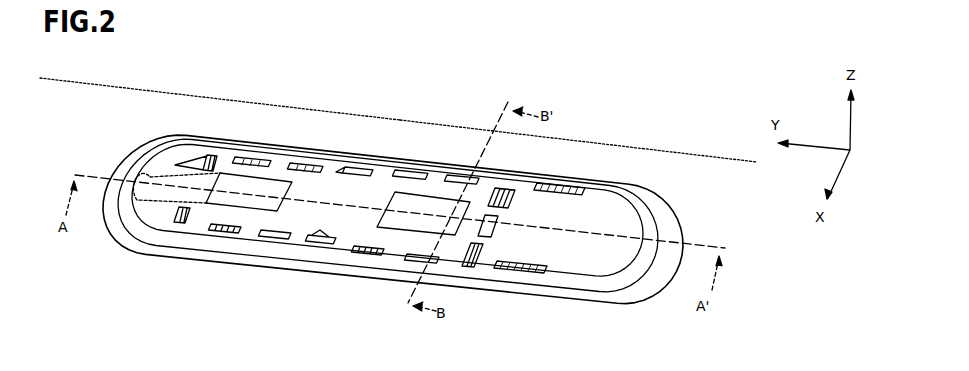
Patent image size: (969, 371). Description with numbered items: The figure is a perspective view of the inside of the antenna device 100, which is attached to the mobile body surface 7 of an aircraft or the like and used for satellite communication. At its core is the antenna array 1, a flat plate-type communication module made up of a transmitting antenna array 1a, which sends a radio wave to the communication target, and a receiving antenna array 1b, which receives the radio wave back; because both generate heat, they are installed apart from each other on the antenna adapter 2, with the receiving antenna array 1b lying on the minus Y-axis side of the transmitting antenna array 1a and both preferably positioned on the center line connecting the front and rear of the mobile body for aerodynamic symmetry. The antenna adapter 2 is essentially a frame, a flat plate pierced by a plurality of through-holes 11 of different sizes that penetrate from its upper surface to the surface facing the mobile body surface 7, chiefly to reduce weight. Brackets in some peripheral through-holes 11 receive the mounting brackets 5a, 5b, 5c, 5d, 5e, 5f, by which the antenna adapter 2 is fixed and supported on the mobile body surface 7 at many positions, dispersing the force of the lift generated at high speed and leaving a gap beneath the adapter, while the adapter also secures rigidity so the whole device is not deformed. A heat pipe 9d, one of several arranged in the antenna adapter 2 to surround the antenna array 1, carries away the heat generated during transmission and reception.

The antenna device 100 is at (393, 199).
The antenna array 1 is at (301, 269).
The transmitting antenna array 1a is at (238, 210).
The receiving antenna array 1b is at (397, 232).
The antenna adapter 2 is at (575, 301).
The mounting bracket 5a is at (172, 228).
The mounting bracket 5b is at (203, 155).
The mounting bracket 5c is at (315, 236).
The mounting bracket 5d is at (350, 167).
The mounting bracket 5e is at (477, 270).
The mounting bracket 5f is at (396, 210).
The mobile body surface 7 is at (103, 137).
The heat pipe 9d is at (578, 131).
The through-hole 11 is at (157, 160).